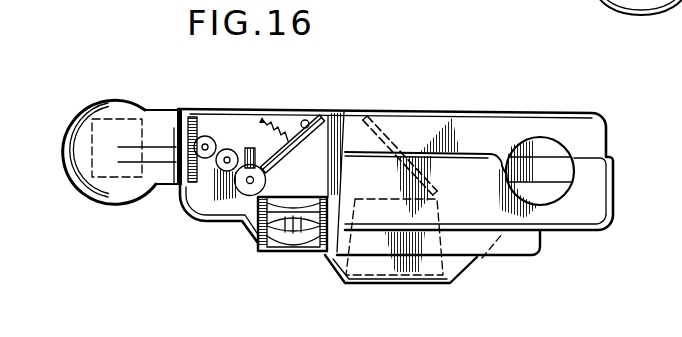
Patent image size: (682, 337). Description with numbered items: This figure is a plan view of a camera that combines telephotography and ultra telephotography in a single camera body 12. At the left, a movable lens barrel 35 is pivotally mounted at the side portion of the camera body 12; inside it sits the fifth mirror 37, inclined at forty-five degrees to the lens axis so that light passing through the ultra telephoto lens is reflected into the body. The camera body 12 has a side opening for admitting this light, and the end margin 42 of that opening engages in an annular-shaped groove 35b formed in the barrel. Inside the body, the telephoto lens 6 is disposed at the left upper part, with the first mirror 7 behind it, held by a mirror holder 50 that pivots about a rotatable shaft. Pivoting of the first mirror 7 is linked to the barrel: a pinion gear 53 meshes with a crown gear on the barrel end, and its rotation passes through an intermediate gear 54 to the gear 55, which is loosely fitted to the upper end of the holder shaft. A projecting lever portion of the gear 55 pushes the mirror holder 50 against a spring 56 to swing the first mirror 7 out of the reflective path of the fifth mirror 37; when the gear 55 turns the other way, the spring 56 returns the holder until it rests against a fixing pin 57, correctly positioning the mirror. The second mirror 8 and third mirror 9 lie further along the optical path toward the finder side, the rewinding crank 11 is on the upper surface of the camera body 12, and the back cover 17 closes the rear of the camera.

The telephoto lens 6 is at (290, 244).
The first mirror 7 is at (305, 131).
The second mirror 8 is at (389, 138).
The third mirror 9 is at (368, 279).
The rewinding crank 11 is at (538, 165).
The camera body 12 is at (566, 244).
The back cover 17 is at (488, 122).
The movable lens barrel 35 is at (113, 203).
The annular-shaped groove 35b is at (173, 128).
The fifth mirror 37 is at (121, 118).
The end margin 42 is at (185, 203).
The mirror holder 50 is at (302, 121).
The pinion gear 53 is at (205, 136).
The intermediate gear 54 is at (229, 149).
The gear 55 is at (243, 191).
The spring 56 is at (268, 118).
The fixing pin 57 is at (320, 112).